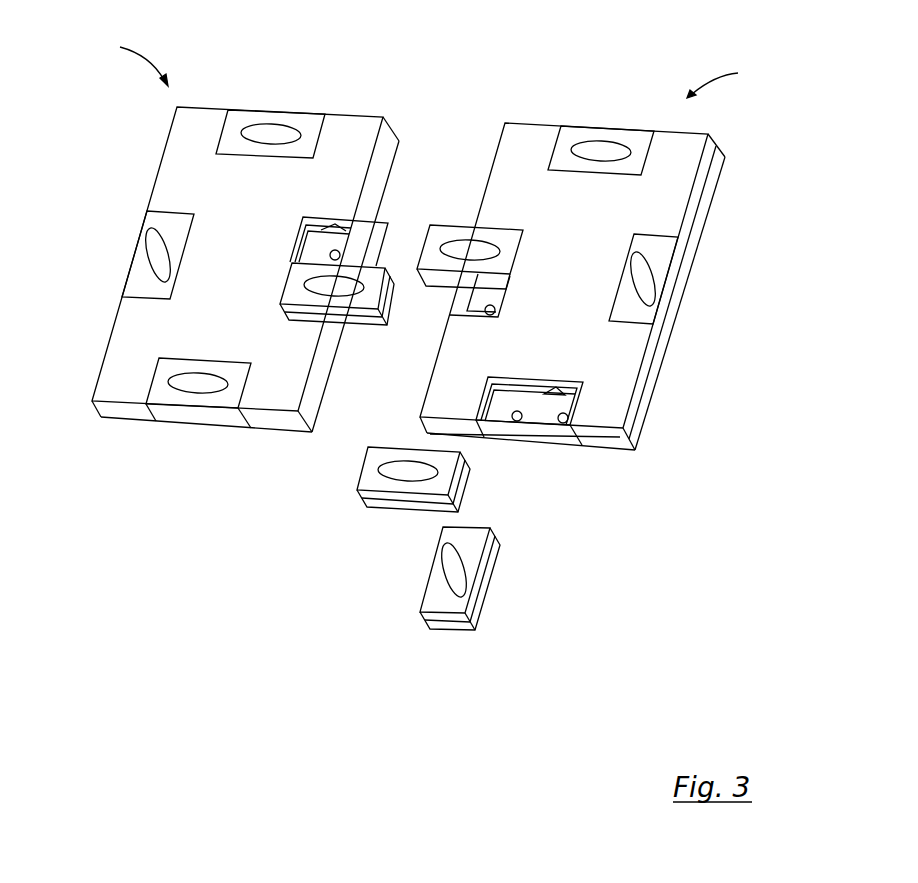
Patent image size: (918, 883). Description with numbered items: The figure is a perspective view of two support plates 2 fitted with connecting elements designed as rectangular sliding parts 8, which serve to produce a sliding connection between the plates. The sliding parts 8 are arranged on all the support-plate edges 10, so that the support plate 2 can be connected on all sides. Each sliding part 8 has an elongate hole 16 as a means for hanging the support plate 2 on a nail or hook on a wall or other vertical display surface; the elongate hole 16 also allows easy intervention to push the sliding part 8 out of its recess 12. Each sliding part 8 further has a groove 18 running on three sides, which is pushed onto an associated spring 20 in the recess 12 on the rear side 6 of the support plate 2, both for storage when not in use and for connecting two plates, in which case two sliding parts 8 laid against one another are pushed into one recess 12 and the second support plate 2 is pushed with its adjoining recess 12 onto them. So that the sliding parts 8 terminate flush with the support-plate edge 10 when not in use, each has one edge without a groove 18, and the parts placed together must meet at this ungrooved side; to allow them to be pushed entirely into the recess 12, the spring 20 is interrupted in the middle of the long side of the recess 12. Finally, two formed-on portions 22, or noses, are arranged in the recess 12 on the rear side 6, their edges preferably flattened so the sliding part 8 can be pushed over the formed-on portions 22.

The support plate 2 is at (423, 62).
The rear side 6 is at (241, 274).
The sliding part 8 is at (307, 127).
The support-plate edge 10 is at (227, 110).
The recess 12 is at (543, 432).
The elongate hole 16 is at (398, 477).
The groove 18 is at (390, 297).
The spring 20 is at (358, 223).
The formed-on portion 22 is at (341, 254).